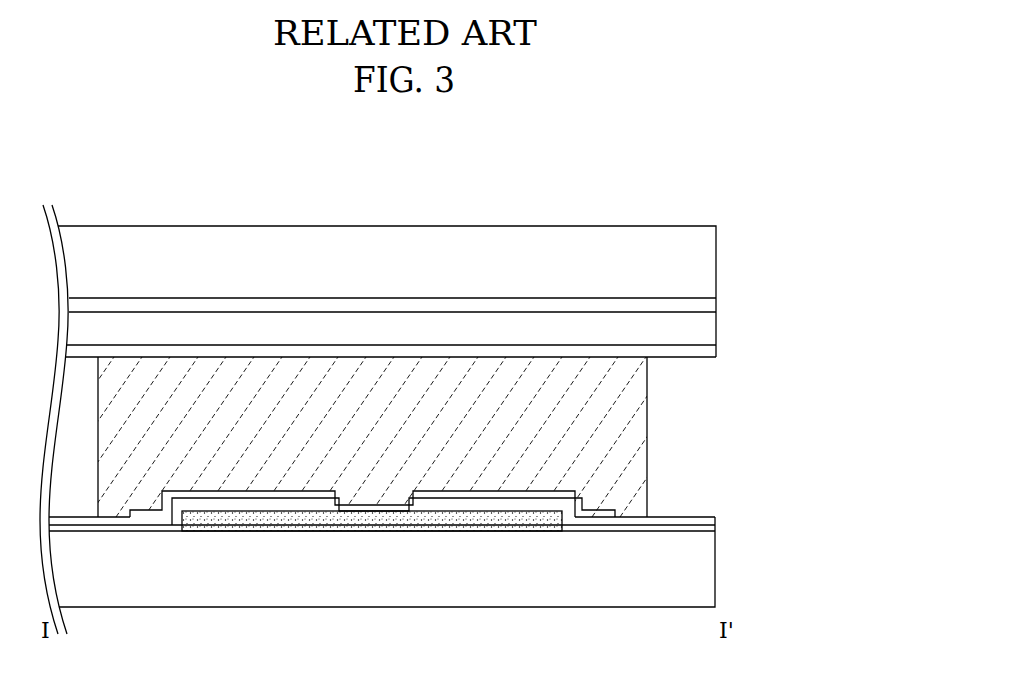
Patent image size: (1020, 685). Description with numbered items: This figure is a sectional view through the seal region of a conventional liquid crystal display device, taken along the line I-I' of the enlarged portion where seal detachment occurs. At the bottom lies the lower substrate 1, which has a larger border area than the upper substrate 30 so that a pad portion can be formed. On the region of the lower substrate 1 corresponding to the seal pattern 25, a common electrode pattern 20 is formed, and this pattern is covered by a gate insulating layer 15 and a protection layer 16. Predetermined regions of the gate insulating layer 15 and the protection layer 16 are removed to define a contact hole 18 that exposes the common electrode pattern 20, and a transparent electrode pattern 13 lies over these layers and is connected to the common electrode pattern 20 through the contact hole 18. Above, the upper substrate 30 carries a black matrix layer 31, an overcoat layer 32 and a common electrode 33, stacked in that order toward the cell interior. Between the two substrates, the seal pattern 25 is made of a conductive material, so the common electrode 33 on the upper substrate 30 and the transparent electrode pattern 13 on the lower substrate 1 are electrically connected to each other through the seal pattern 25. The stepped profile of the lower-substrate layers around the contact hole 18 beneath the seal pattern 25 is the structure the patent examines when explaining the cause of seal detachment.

The lower substrate 1 is at (705, 575).
The gate insulating layer 15 is at (707, 527).
The common electrode pattern 20 is at (358, 524).
The contact hole 18 is at (383, 493).
The transparent electrode pattern 13 is at (582, 484).
The protection layer 16 is at (695, 518).
The seal pattern 25 is at (636, 401).
The common electrode 33 is at (708, 354).
The overcoat layer 32 is at (708, 329).
The black matrix layer 31 is at (708, 303).
The upper substrate 30 is at (708, 265).